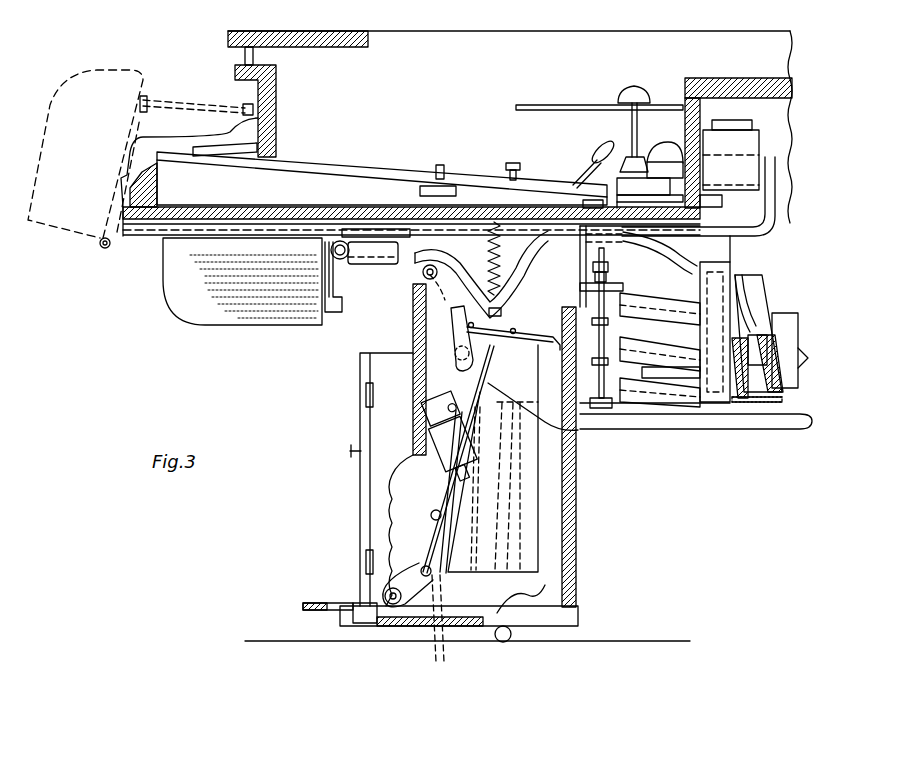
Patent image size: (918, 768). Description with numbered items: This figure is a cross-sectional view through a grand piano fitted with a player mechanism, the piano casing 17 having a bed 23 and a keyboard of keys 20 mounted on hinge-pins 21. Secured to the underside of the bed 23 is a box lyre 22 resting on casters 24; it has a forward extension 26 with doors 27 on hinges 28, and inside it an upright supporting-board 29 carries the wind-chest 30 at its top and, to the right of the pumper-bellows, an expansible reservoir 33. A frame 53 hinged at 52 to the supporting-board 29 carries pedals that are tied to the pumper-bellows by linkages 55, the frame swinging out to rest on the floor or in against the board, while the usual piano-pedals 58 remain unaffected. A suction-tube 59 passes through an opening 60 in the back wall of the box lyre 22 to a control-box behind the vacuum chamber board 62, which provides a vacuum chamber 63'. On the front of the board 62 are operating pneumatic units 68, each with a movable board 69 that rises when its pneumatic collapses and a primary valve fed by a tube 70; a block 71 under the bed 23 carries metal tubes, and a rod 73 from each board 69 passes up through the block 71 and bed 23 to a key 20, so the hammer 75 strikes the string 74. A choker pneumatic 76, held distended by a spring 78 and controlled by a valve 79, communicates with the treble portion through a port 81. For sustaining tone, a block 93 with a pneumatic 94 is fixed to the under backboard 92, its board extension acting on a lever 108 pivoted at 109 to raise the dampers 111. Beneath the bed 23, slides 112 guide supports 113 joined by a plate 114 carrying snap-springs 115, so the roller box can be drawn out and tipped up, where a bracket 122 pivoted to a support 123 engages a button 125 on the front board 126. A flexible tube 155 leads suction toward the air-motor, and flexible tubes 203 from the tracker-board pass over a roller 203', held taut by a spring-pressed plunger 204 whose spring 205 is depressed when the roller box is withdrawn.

The piano casing 17 is at (455, 38).
The keys 20 is at (352, 162).
The hinge-pins 21 is at (441, 166).
The box lyre 22 is at (580, 541).
The bed 23 is at (290, 208).
The casters 24 is at (501, 648).
The forward extension 26 is at (381, 362).
The doors 27 is at (360, 386).
The hinges 28 is at (360, 567).
The supporting-board 29 is at (470, 492).
The wind-chest 30 is at (455, 385).
The expansible reservoir 33 is at (508, 553).
The hinge 52 is at (436, 540).
The frame 53 is at (437, 526).
The linkages 55 is at (445, 545).
The piano-pedals 58 is at (303, 608).
The suction-tube 59 is at (636, 428).
The opening 60 is at (586, 438).
The vacuum chamber board 62 is at (715, 403).
The vacuum chamber 63' is at (756, 432).
The operating pneumatic units 68 is at (641, 318).
The movable board 69 is at (640, 344).
The tube 70 is at (680, 250).
The block 71 is at (607, 252).
The rod 73 is at (595, 328).
The string 74 is at (549, 110).
The hammer 75 is at (590, 157).
The choker pneumatic 76 is at (762, 402).
The spring 78 is at (760, 291).
The valve 79 is at (770, 341).
The port 81 is at (770, 313).
The under backboard 92 is at (685, 126).
The block 93 is at (750, 142).
The pneumatic 94 is at (740, 166).
The lever 108 is at (722, 205).
The pivot 109 is at (626, 150).
The dampers 111 is at (632, 95).
The slides 112 is at (140, 241).
The supports 113 is at (338, 250).
The plate 114 is at (362, 268).
The snap-spring 115 is at (373, 236).
The bracket 122 is at (243, 110).
The support 123 is at (147, 96).
The button 125 is at (246, 107).
The front board 126 is at (278, 100).
The flexible tube 155 is at (455, 345).
The flexible tube 203 is at (481, 274).
The roller 203' is at (380, 314).
The spring-pressed plunger 204 is at (475, 275).
The spring 205 is at (494, 228).